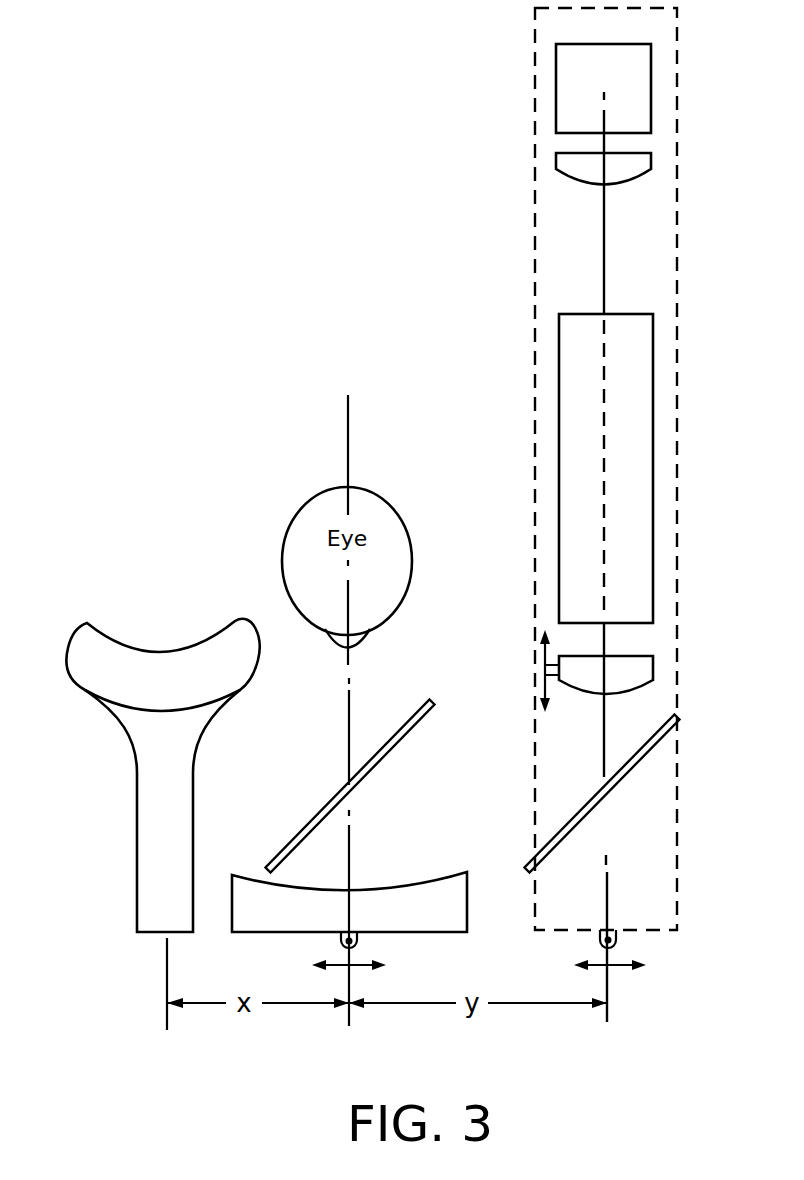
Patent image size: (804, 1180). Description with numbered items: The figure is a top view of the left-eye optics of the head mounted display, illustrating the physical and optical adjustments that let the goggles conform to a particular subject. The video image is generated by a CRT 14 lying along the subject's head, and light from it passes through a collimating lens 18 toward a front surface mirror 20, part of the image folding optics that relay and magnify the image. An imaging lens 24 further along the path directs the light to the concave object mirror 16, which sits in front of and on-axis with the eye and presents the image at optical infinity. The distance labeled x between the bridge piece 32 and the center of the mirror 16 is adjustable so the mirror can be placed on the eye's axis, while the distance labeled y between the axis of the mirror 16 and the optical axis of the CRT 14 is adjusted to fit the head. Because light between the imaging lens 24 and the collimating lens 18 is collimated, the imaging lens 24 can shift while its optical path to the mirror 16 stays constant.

The front surface mirror 20 is at (645, 78).
The collimating lens 18 is at (645, 165).
The means for generating the video image 14 is at (652, 412).
The imaging lens 24 is at (650, 666).
The concave mirror 16 is at (400, 933).
The bridge piece 32 is at (198, 640).